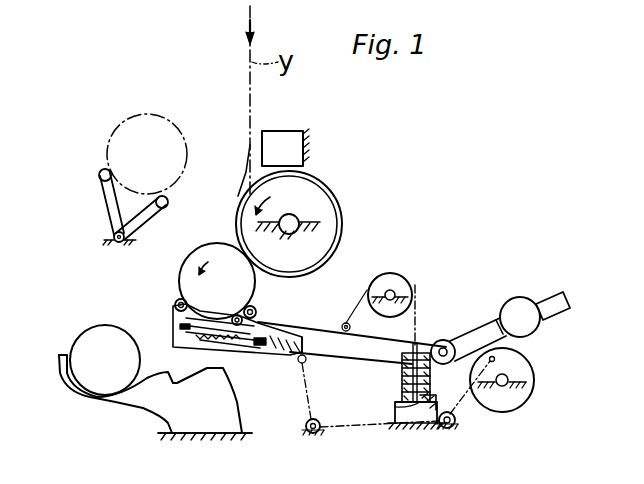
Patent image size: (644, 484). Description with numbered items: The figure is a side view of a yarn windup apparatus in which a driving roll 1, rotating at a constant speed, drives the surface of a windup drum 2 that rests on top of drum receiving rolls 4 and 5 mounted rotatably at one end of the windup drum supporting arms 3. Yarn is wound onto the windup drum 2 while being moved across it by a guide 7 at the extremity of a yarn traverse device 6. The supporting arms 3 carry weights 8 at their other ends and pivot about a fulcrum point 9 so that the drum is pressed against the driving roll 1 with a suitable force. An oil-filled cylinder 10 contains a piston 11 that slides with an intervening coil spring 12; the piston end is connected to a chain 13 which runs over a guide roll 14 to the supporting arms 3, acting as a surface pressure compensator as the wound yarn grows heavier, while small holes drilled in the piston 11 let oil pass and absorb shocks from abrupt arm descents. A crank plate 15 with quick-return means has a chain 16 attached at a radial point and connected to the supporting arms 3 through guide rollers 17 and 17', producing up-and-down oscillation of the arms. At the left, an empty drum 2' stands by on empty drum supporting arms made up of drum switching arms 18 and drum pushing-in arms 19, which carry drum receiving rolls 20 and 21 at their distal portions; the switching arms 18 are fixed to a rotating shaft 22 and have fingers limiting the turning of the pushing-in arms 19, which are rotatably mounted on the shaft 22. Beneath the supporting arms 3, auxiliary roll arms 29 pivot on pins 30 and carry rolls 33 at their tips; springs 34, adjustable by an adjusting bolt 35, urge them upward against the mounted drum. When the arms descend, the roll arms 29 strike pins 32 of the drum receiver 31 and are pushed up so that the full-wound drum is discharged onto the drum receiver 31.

The driving roll 1 is at (332, 198).
The windup drum 2 is at (217, 265).
The empty drum 2' is at (161, 142).
The windup drum supporting arms 3 is at (316, 331).
The drum receiving roll 4 is at (178, 300).
The drum receiving roll 5 is at (257, 311).
The yarn traverse device 6 is at (303, 131).
The guide 7 is at (246, 176).
The weights 8 is at (522, 297).
The fulcrum point 9 is at (446, 344).
The oil-filled cylinder 10 is at (396, 412).
The piston 11 is at (440, 390).
The coil spring 12 is at (402, 376).
The chain 13 is at (418, 302).
The guide roll 14 is at (396, 273).
The crank plate 15 is at (505, 410).
The chain 16 is at (350, 436).
The guide roller 17 is at (463, 418).
The guide roller 17' is at (325, 420).
The drum switching arms 18 is at (141, 224).
The drum pushing-in arms 19 is at (101, 196).
The drum receiving roll 20 is at (168, 200).
The drum receiving roll 21 is at (102, 169).
The rotating shaft 22 is at (114, 234).
The auxiliary arms 29 is at (212, 337).
The pins 30 is at (181, 327).
The drum receiver 31 is at (70, 388).
The pins 32 is at (208, 376).
The rolls 33 is at (235, 315).
The springs 34 is at (238, 350).
The adjusting bolt 35 is at (264, 343).